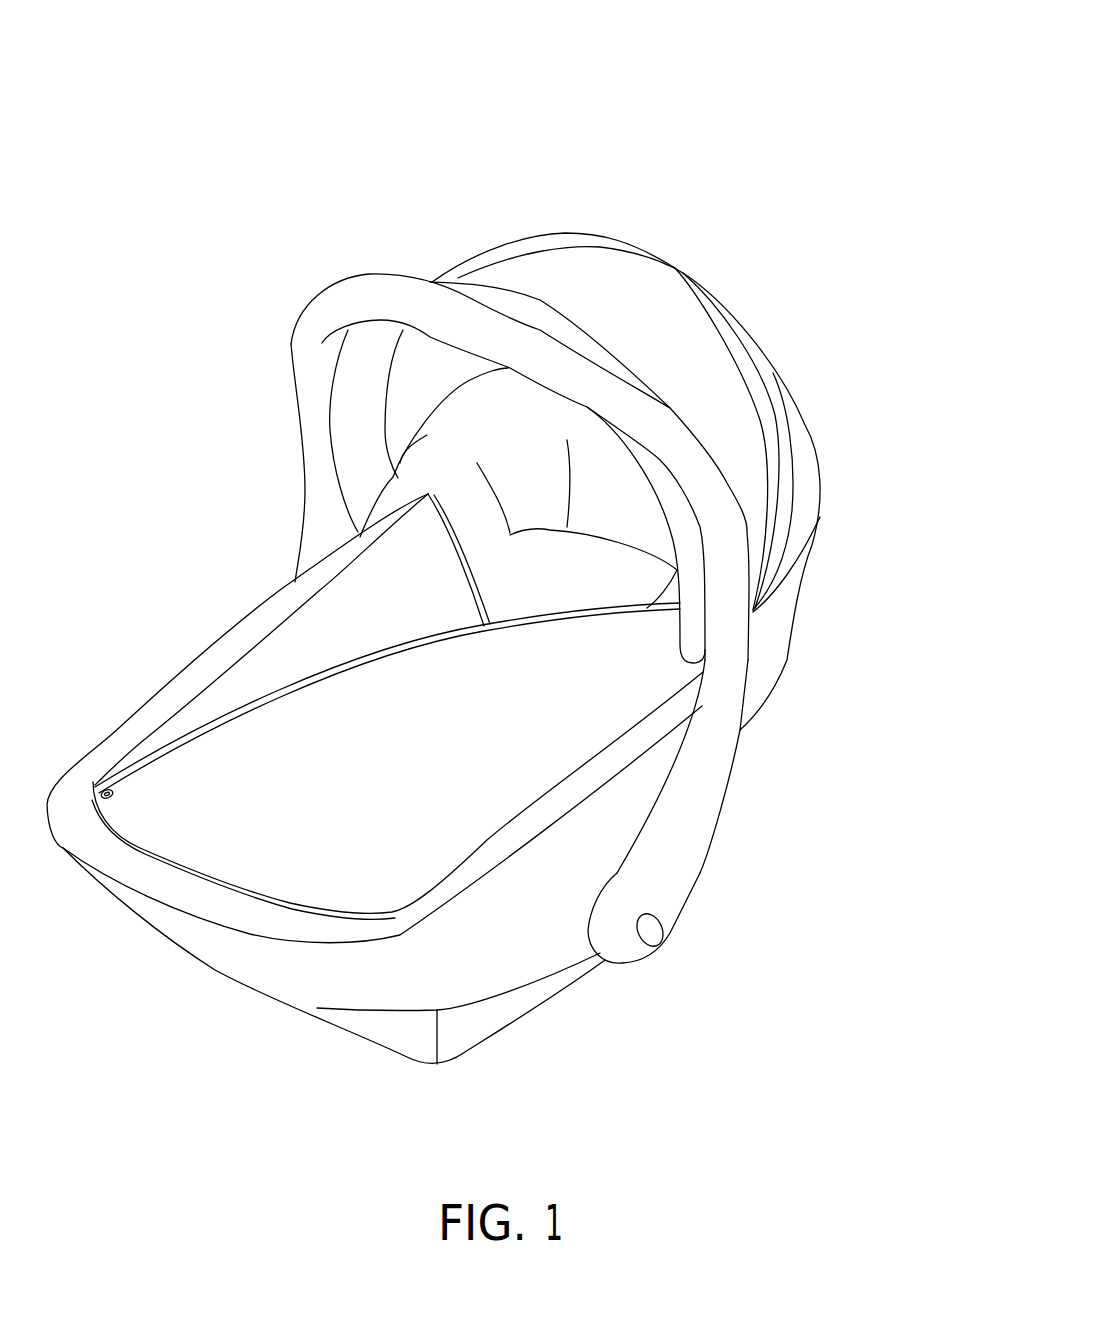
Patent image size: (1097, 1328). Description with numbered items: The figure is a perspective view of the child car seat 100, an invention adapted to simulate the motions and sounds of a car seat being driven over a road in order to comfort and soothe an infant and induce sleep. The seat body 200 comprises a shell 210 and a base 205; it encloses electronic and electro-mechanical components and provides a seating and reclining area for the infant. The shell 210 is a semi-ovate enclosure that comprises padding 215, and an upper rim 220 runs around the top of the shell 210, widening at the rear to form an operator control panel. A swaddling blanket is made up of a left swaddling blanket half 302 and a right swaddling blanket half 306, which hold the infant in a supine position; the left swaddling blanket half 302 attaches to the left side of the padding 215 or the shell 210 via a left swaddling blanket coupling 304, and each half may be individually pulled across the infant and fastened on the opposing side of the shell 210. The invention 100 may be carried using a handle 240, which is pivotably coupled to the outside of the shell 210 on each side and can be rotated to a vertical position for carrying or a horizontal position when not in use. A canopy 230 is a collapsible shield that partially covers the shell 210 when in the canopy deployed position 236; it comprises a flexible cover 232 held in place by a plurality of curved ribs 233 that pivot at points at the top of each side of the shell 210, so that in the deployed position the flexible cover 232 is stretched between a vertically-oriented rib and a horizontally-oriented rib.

The child car seat 100 is at (785, 132).
The seat body 200 is at (813, 253).
The base 205 is at (465, 1031).
The shell 210 is at (417, 963).
The padding 215 is at (542, 583).
The upper rim 220 is at (493, 848).
The canopy 230 is at (600, 267).
The flexible cover 232 is at (517, 283).
The plurality of curved ribs 233 is at (555, 233).
The canopy deployed position 236 is at (762, 240).
The handle 240 is at (358, 300).
The left swaddling blanket half 302 is at (267, 677).
The left swaddling blanket coupling 304 is at (175, 713).
The right swaddling blanket half 306 is at (317, 863).